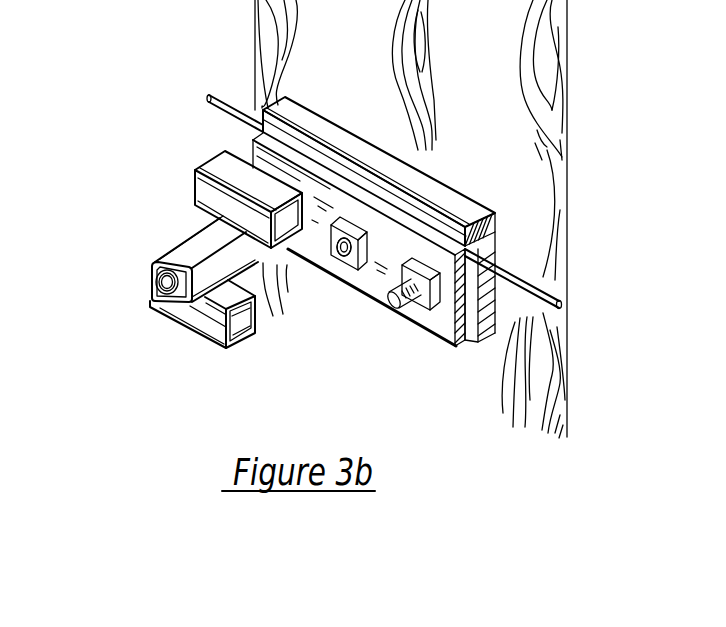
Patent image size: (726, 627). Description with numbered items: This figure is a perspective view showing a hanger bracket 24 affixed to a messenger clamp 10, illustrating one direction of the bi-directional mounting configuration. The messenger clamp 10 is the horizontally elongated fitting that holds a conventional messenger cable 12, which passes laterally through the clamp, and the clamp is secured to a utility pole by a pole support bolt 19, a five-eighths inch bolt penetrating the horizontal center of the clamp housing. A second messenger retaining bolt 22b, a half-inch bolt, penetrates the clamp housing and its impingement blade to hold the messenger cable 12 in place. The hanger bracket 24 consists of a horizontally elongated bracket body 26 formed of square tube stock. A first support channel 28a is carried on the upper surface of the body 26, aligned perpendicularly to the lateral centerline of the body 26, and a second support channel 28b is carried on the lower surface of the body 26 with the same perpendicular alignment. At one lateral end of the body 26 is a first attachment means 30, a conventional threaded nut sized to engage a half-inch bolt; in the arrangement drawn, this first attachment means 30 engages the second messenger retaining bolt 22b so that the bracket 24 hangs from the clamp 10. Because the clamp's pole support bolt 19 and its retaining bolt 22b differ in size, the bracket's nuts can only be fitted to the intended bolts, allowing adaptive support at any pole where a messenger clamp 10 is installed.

The messenger clamp 10 is at (489, 196).
The messenger cable 12 is at (538, 282).
The pole support bolt 19 is at (346, 238).
The second messenger retaining bolt 22b is at (400, 318).
The hanger bracket 24 is at (106, 188).
The bracket body 26 is at (172, 246).
The first support channel 28a is at (212, 322).
The second support channel 28b is at (220, 165).
The first attachment means 30 is at (304, 206).